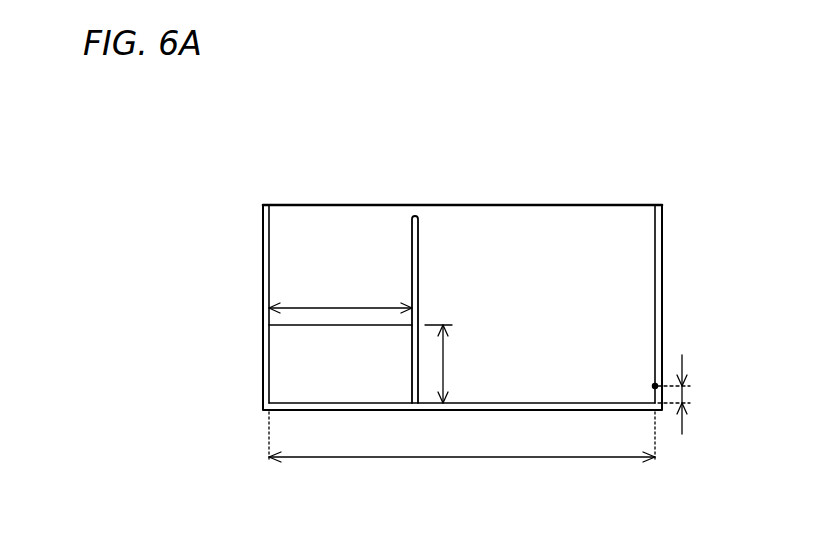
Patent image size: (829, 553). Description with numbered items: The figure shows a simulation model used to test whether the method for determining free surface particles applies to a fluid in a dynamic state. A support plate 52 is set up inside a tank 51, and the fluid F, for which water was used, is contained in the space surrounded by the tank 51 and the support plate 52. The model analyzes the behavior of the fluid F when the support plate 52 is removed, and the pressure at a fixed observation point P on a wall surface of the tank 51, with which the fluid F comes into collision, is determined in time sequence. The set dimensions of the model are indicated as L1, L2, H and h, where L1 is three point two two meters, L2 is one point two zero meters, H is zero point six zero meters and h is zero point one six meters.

The tank 51 is at (262, 343).
The support plate 52 is at (420, 246).
The fluid F is at (348, 378).
The set dimension L1 is at (462, 437).
The set dimension L2 is at (340, 297).
The set dimension H is at (449, 364).
The fixed observation point P is at (646, 377).
The set dimension h is at (684, 394).